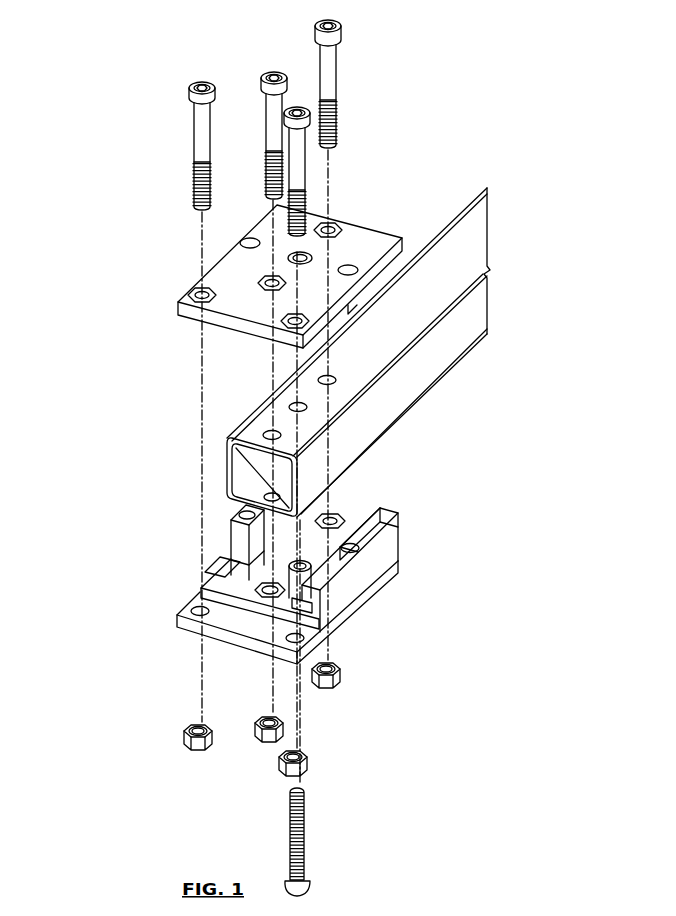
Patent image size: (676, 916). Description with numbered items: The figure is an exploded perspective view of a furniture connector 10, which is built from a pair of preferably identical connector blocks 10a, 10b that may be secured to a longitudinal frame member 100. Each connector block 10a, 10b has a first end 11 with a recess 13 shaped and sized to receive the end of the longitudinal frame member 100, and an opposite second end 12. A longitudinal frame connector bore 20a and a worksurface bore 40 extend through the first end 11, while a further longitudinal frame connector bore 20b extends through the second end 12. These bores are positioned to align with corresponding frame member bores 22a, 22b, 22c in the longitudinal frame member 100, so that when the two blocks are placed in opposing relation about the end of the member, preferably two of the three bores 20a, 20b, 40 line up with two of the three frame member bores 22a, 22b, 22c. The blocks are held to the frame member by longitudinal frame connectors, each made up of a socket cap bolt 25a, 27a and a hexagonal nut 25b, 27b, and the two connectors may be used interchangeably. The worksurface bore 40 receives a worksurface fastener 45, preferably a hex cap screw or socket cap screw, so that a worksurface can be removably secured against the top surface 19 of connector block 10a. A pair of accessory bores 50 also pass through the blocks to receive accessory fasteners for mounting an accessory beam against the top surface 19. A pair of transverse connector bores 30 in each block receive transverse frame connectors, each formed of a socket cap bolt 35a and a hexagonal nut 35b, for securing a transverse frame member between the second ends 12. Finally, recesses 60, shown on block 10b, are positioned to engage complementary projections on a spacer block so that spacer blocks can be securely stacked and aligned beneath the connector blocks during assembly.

The furniture connector 10 is at (121, 380).
The connector block 10a is at (408, 244).
The connector block 10b is at (404, 532).
The first end 11 is at (372, 580).
The second end 12 is at (362, 680).
The recess 13 is at (340, 500).
The top surface 19 is at (383, 224).
The longitudinal frame connector bore 20a is at (330, 228).
The longitudinal frame connector bore 20b is at (262, 285).
The frame member bore 22a is at (330, 381).
The frame member bore 22b is at (300, 408).
The frame member bore 22c is at (272, 432).
The longitudinal frame connector bolt 25a is at (336, 62).
The longitudinal frame connector nut 25b is at (327, 692).
The longitudinal frame connector bolt 27a is at (272, 107).
The longitudinal frame connector nut 27b is at (262, 740).
The transverse connector bore 30 is at (195, 293).
The transverse frame connector bolt 35a is at (197, 118).
The transverse frame connector nut 35b is at (183, 737).
The worksurface bore 40 is at (300, 262).
The worksurface fastener 45 is at (305, 845).
The accessory bore 50 is at (250, 241).
The recess 60 is at (382, 512).
The longitudinal frame member 100 is at (490, 250).